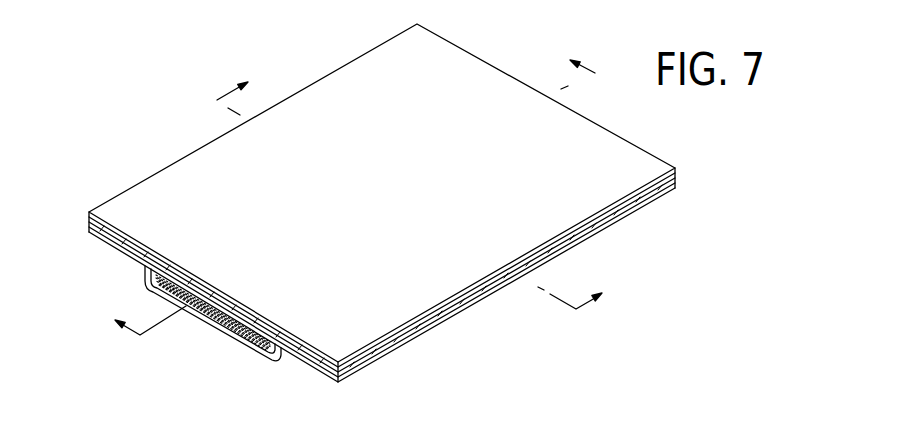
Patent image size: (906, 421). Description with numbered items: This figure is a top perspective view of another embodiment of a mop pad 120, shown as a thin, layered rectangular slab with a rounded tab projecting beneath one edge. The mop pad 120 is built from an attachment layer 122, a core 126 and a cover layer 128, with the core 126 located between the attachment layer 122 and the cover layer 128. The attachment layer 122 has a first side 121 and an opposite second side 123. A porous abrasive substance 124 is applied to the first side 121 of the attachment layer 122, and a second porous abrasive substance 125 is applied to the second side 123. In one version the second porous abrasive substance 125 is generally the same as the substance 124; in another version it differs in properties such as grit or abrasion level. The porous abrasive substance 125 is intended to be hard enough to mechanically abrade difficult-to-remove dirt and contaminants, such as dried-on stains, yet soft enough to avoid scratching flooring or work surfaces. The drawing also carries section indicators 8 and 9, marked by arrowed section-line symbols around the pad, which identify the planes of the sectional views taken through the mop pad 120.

The mop pad 120 is at (146, 87).
The first side 121 is at (316, 370).
The attachment layer 122 is at (400, 338).
The second side 123 is at (463, 304).
The substance 124 is at (355, 368).
The second porous abrasive substance 125 is at (602, 195).
The core 126 is at (224, 327).
The cover layer 128 is at (249, 349).
The section line 8- 8 is at (361, 214).
The section line 9- 9 is at (401, 214).